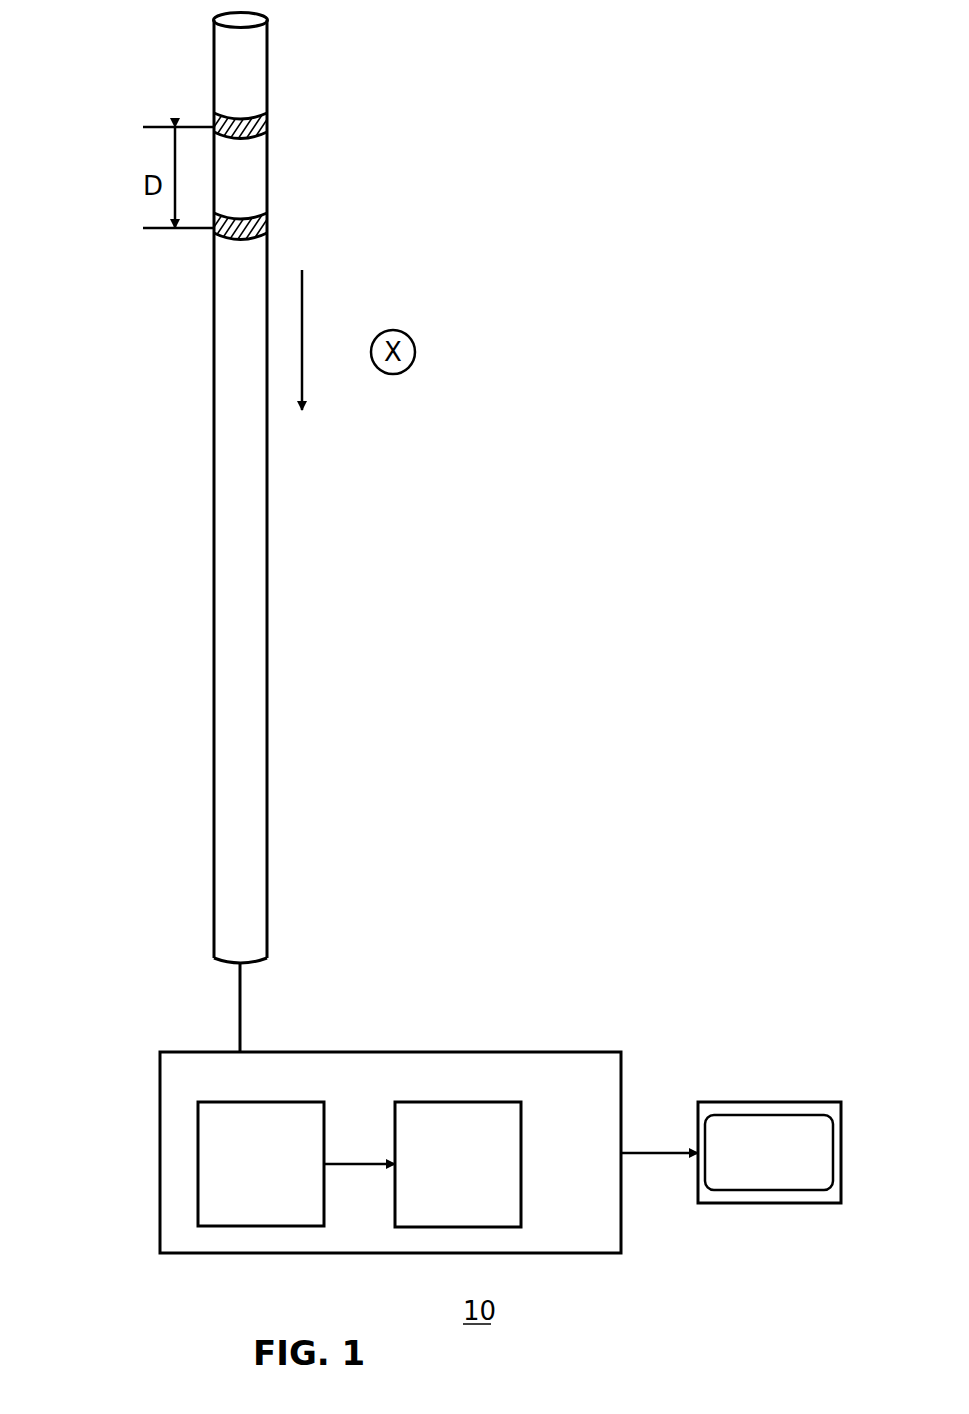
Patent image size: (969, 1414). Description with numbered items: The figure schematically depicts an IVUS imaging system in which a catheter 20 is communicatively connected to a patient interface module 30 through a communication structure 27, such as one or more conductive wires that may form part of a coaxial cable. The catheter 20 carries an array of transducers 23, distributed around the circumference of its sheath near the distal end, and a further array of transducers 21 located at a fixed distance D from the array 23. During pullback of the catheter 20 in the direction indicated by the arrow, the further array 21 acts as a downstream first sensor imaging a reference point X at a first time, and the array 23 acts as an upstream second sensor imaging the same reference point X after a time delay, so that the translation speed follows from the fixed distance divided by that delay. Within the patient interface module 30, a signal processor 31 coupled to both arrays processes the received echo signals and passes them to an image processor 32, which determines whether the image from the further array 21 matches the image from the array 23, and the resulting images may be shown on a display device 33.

The catheter 20 is at (267, 527).
The further array of transducers 21 is at (267, 228).
The array of transducers 23 is at (267, 118).
The communication structure 27 is at (240, 1018).
The patient interface module 30 is at (587, 1052).
The signal processor 31 is at (215, 1165).
The image processor 32 is at (482, 1152).
The display device 33 is at (763, 1102).